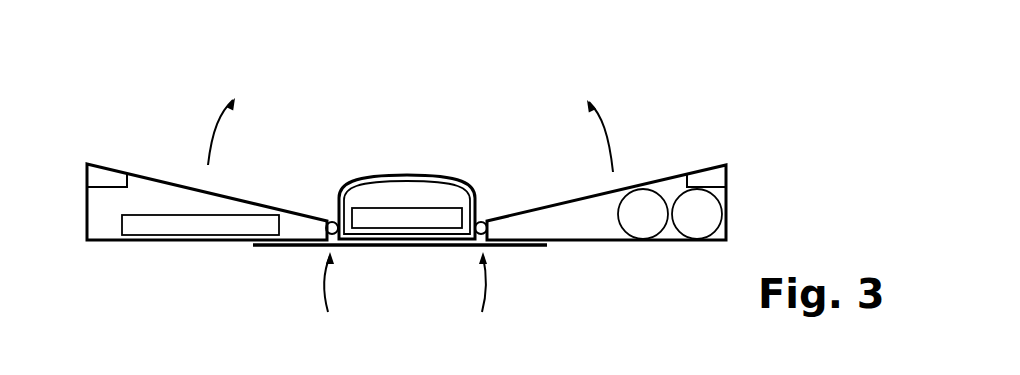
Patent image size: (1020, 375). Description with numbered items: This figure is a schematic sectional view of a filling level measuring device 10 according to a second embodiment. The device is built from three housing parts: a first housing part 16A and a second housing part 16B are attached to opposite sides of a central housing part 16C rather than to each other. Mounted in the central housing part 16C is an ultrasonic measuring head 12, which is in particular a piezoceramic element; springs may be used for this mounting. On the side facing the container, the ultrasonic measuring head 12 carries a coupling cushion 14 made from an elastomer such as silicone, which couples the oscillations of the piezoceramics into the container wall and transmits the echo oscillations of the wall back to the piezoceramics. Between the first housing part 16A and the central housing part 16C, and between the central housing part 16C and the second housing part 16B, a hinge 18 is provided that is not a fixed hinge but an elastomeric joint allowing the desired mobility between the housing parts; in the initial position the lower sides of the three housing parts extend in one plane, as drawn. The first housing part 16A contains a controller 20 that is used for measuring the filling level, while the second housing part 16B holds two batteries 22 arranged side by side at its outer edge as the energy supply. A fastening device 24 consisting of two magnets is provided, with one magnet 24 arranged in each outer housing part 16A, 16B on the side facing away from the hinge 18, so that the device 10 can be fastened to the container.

The filling level measuring device 10 is at (645, 85).
The ultrasonic measuring head 12 is at (405, 230).
The coupling cushion 14 is at (387, 181).
The first housing part 16A is at (160, 176).
The second housing part 16B is at (566, 198).
The central housing part 16C is at (428, 175).
The hinge 18 is at (332, 221).
The controller 20 is at (184, 230).
The batteries 22 is at (645, 224).
The fastening device 24 is at (105, 177).